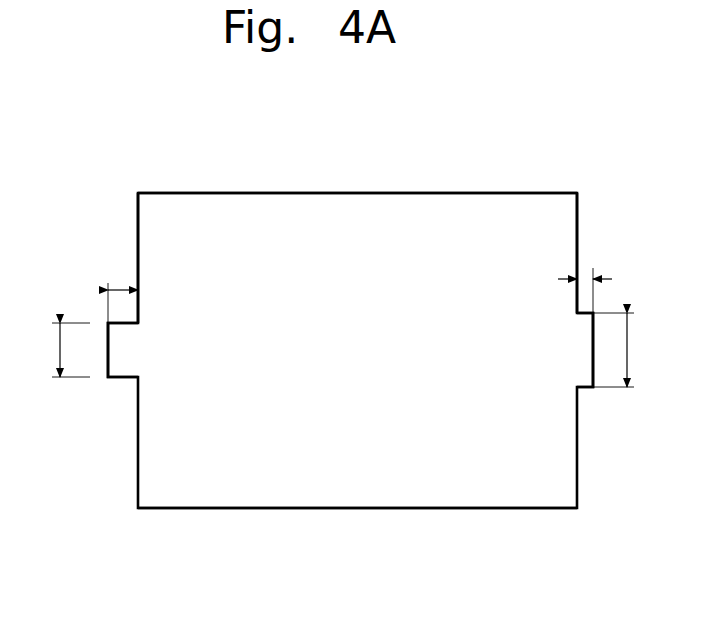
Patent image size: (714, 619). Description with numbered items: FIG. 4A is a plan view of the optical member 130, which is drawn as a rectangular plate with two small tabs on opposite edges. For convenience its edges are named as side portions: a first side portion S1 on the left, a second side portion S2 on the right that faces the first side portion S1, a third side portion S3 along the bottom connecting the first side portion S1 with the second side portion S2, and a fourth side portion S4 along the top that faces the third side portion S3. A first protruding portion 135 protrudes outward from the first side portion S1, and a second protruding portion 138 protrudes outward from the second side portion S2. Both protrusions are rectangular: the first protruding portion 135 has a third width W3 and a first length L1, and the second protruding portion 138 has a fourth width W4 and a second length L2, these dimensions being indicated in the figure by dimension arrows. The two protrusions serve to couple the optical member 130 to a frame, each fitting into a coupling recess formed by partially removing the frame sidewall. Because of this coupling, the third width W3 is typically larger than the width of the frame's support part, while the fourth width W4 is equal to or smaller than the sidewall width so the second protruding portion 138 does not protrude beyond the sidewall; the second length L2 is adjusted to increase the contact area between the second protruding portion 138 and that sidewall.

The optical member 130 is at (517, 178).
The first protruding portion 135 is at (125, 368).
The second protruding portion 138 is at (583, 382).
The first side portion S1 is at (138, 234).
The second side portion S2 is at (577, 236).
The third side portion S3 is at (403, 510).
The fourth side portion S4 is at (403, 192).
The third width W3 is at (122, 295).
The fourth width W4 is at (590, 284).
The first length L1 is at (61, 350).
The second length L2 is at (621, 350).